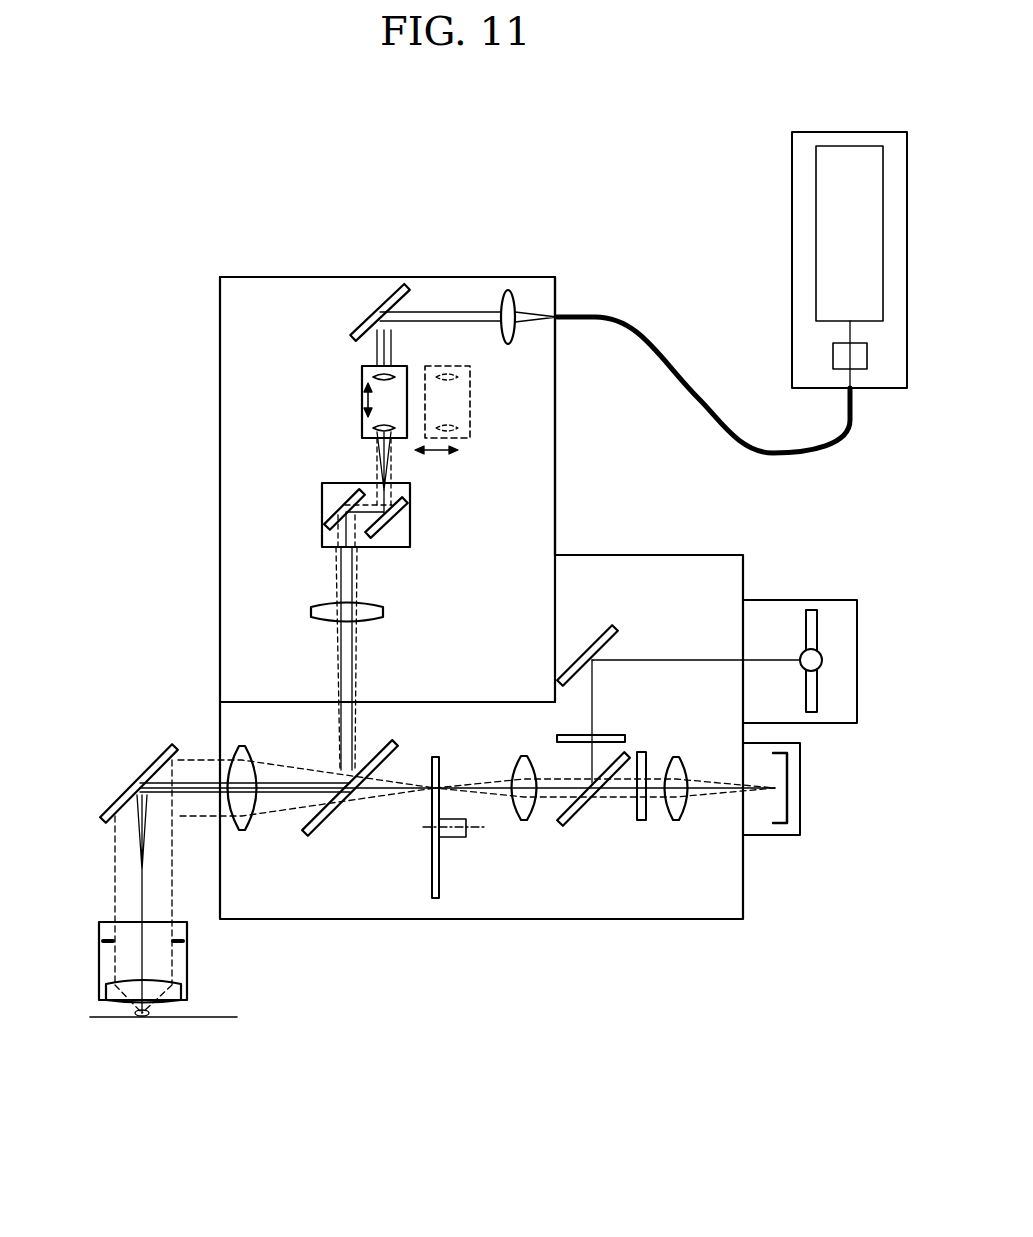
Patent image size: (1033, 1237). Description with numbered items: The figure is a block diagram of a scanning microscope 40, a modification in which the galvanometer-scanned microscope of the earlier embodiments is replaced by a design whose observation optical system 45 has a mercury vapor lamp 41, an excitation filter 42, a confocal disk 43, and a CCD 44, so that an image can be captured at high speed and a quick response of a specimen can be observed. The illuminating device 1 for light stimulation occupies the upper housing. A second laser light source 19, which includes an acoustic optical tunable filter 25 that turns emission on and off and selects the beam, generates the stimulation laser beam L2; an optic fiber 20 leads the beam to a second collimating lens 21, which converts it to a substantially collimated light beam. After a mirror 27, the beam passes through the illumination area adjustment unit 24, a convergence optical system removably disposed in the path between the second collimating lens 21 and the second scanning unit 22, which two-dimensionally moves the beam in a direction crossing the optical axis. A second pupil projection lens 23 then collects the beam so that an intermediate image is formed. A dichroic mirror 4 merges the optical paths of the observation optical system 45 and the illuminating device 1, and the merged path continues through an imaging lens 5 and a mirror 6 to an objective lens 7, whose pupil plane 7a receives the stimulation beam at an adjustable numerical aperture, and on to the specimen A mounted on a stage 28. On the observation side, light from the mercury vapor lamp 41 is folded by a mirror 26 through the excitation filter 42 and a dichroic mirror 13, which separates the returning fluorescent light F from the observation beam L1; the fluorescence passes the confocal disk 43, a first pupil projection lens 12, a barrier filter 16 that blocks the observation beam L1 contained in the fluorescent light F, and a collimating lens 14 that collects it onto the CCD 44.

The scanning microscope 40 is at (132, 218).
The illuminating device 1 is at (265, 277).
The mirror 27 is at (385, 290).
The second collimating lens 21 is at (510, 290).
The second laser light source 19 is at (792, 192).
The acoustic optical tunable filter 25 is at (833, 356).
The optic fiber 20 is at (798, 458).
The illumination area adjustment unit 24 is at (362, 396).
The second scanning unit 22 is at (410, 547).
The second pupil projection lens 23 is at (372, 617).
The dichroic mirror 4 is at (322, 825).
The imaging lens 5 is at (250, 827).
The mirror 6 is at (155, 757).
The objective lens 7 is at (187, 973).
The pupil plane 7a is at (185, 930).
The stage 28 is at (222, 1016).
The specimen A is at (160, 1018).
The confocal disk 43 is at (440, 880).
The first pupil projection lens 12 is at (527, 822).
The dichroic mirror 13 is at (573, 815).
The excitation filter 42 is at (620, 733).
The mirror 26 is at (615, 628).
The mercury vapor lamp 41 is at (817, 692).
The barrier filter 16 is at (644, 822).
The collimating lens 14 is at (683, 815).
The CCD 44 is at (787, 800).
The observation optical system 45 is at (612, 946).
The observation laser beam L1 is at (386, 790).
The stimulation laser beam L2 is at (455, 312).
The fluorescent light F is at (720, 790).